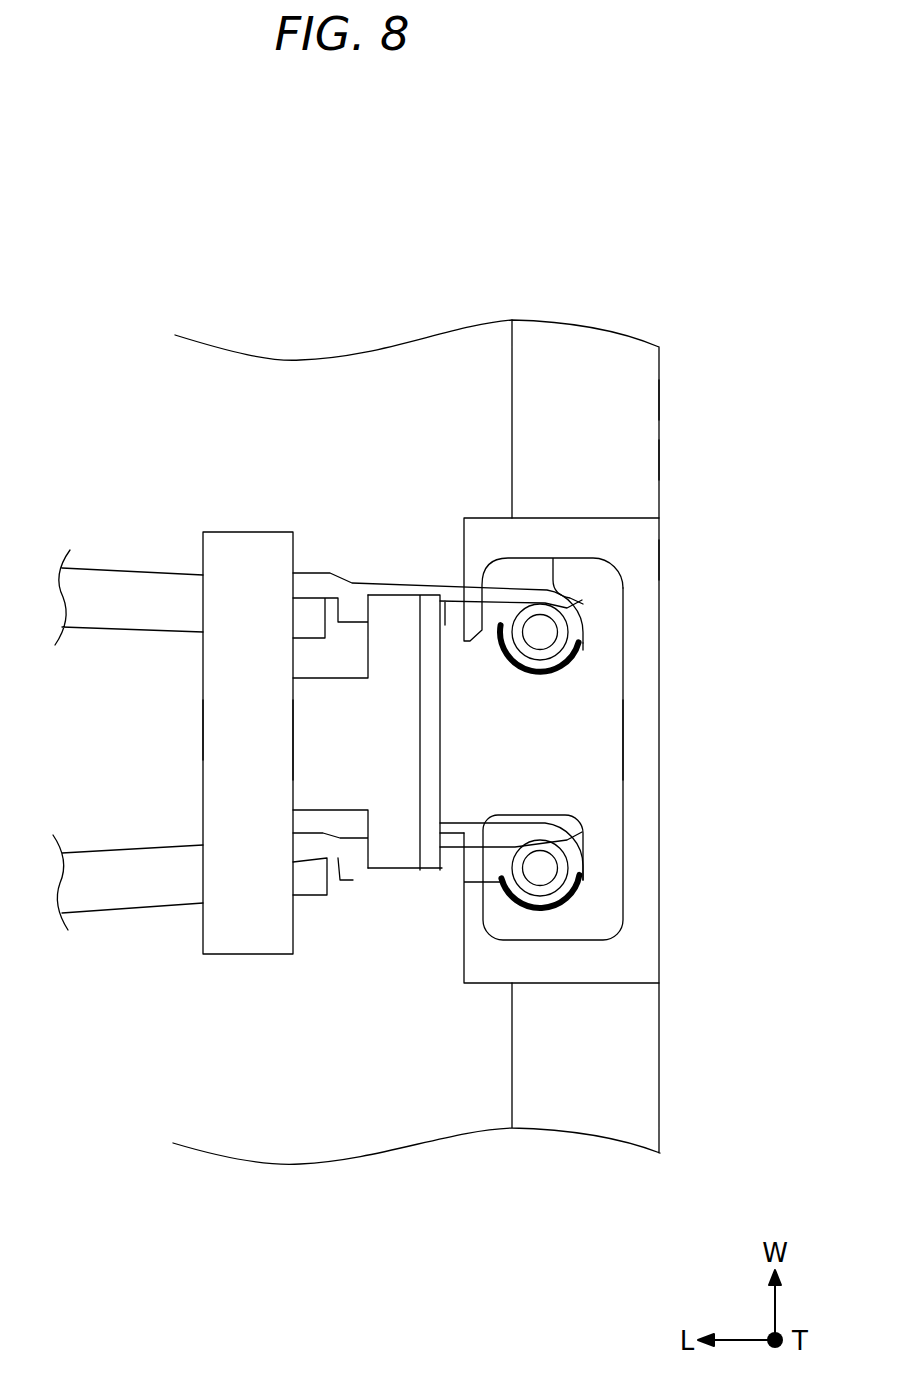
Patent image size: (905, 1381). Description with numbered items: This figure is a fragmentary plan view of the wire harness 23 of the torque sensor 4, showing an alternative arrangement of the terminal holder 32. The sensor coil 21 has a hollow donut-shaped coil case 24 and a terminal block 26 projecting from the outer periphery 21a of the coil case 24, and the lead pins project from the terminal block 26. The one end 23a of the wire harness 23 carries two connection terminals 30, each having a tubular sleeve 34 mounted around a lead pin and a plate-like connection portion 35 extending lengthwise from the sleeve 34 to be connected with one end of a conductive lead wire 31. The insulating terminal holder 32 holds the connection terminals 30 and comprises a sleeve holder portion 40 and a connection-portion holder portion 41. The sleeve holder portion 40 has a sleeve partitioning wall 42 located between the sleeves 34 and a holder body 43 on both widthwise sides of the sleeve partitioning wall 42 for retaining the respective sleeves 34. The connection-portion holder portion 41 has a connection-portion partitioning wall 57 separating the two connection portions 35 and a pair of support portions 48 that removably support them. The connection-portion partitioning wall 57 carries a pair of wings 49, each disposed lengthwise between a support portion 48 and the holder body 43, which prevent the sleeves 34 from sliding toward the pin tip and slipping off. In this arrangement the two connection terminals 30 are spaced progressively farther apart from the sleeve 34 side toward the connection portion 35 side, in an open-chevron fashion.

The torque sensor 4 is at (461, 256).
The sensor coil 21 is at (598, 352).
The outer periphery of sensor coil 21a is at (632, 400).
The wire harness 23 is at (131, 440).
The one end of wire harness 23a is at (384, 537).
The coil case 24 is at (640, 455).
The terminal block 26 is at (640, 562).
The connection terminal 30 is at (579, 610).
The lead wire 31 is at (103, 613).
The terminal holder 32 is at (639, 786).
The sleeve 34 is at (568, 652).
The connection portion 35 is at (316, 585).
The sleeve holder portion 40 is at (604, 709).
The connection-portion holder portion 41 is at (228, 733).
The sleeve partitioning wall 42 is at (555, 737).
The holder body 43 is at (588, 575).
The support portion 48 is at (255, 548).
The wing 49 is at (400, 610).
The connection-portion partitioning wall 57 is at (325, 748).